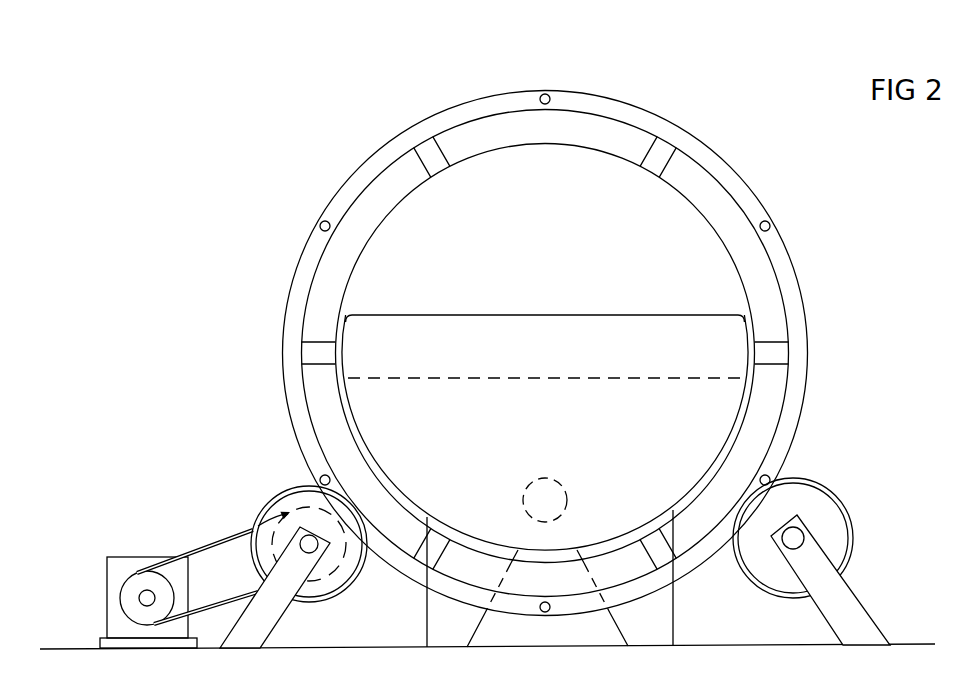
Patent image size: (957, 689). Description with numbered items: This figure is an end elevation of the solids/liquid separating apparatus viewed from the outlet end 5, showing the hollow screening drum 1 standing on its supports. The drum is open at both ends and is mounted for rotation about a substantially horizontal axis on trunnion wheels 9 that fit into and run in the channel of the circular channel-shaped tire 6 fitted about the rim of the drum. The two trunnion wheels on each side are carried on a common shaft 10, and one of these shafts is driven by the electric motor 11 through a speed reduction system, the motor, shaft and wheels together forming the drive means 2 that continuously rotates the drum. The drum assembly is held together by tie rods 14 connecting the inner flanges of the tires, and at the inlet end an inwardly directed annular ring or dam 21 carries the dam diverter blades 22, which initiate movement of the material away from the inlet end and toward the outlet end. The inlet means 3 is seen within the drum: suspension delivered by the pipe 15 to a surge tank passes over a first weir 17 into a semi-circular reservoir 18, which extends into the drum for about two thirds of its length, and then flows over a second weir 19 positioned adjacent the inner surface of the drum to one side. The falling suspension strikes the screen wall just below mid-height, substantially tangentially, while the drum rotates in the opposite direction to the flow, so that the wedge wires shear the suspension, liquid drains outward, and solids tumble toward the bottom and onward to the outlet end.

The screening drum 1 is at (358, 137).
The drive means 2 is at (218, 498).
The inlet means 3 is at (549, 293).
The outlet end 5 is at (416, 476).
The tire 6 is at (291, 291).
The trunnion wheels 9 is at (286, 490).
The shaft 10 is at (320, 551).
The electric motor 11 is at (122, 556).
The tie rods 14 is at (548, 96).
The pipe 15 is at (566, 485).
The first weir 17 is at (483, 377).
The semi-circular reservoir 18 is at (604, 314).
The second weir 19 is at (750, 385).
The dam 21 is at (722, 203).
The dam diverter blades 22 is at (665, 155).